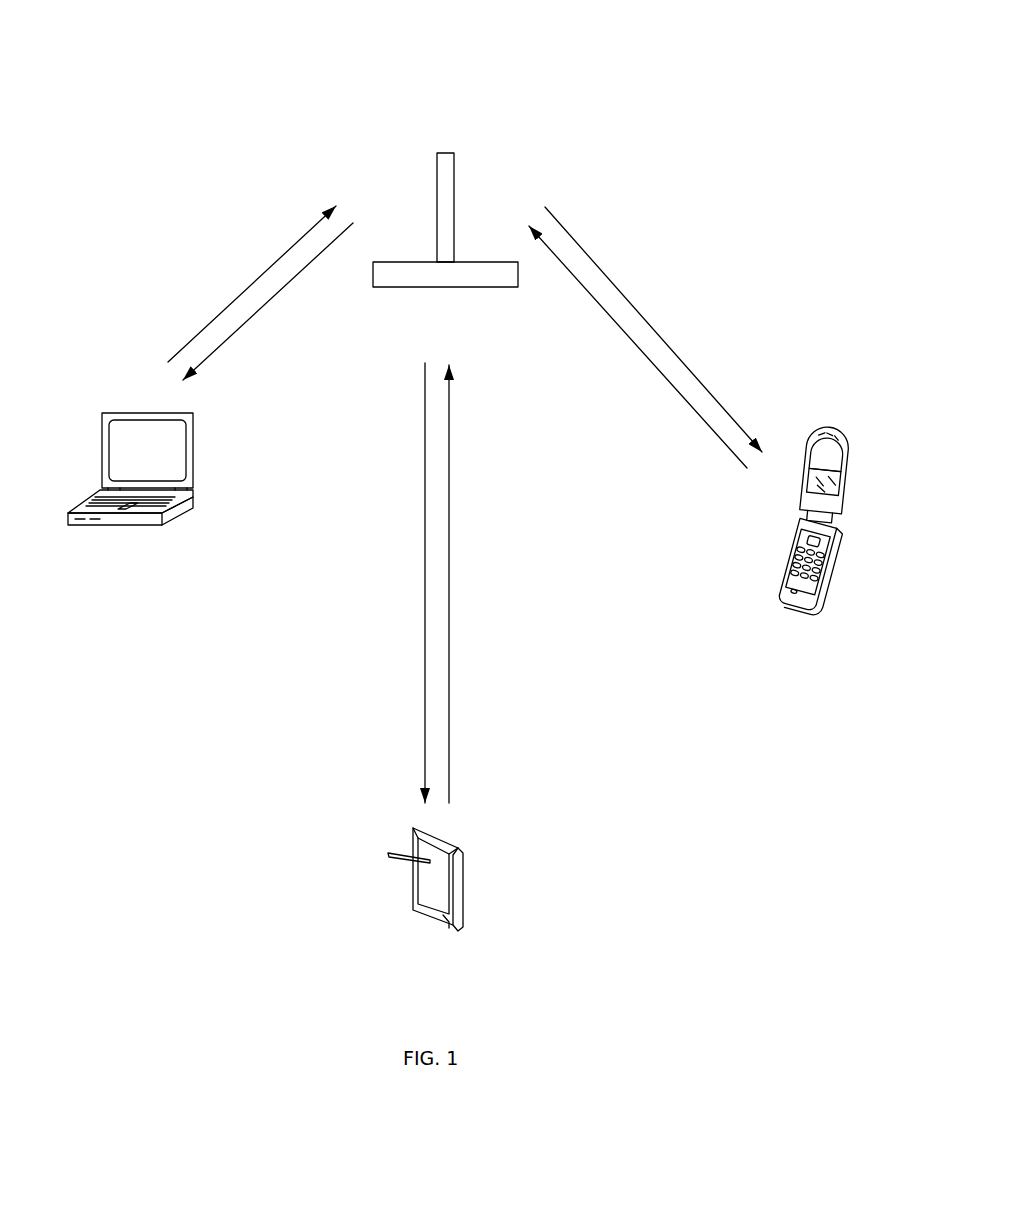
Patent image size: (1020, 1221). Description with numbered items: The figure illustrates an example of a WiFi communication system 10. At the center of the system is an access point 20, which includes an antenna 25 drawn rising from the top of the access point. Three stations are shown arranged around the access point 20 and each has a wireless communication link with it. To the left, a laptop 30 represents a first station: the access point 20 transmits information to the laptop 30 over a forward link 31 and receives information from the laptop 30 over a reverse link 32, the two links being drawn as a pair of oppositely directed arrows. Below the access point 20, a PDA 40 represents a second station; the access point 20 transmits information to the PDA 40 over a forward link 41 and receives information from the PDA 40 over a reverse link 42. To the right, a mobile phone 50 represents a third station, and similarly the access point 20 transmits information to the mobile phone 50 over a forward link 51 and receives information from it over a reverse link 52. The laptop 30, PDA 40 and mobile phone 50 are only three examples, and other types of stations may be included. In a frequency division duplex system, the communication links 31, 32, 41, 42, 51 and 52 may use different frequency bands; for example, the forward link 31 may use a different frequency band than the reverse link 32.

The WiFi communication system 10 is at (659, 68).
The access point 20 is at (450, 288).
The antenna 25 is at (452, 131).
The station (laptop) 30 is at (122, 526).
The forward link 31 is at (259, 274).
The reverse link 32 is at (266, 305).
The station (PDA) 40 is at (455, 930).
The forward link 41 is at (424, 545).
The reverse link 42 is at (450, 545).
The station (mobile phone) 50 is at (793, 613).
The forward link 51 is at (652, 325).
The reverse link 52 is at (637, 345).